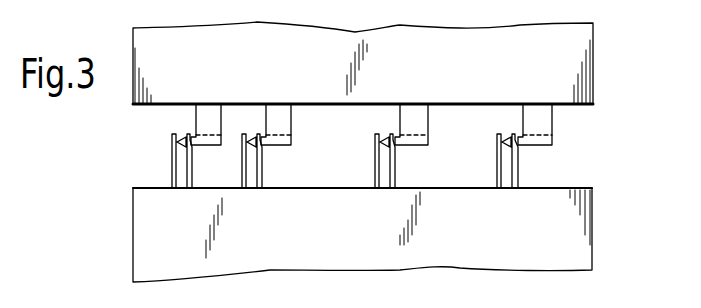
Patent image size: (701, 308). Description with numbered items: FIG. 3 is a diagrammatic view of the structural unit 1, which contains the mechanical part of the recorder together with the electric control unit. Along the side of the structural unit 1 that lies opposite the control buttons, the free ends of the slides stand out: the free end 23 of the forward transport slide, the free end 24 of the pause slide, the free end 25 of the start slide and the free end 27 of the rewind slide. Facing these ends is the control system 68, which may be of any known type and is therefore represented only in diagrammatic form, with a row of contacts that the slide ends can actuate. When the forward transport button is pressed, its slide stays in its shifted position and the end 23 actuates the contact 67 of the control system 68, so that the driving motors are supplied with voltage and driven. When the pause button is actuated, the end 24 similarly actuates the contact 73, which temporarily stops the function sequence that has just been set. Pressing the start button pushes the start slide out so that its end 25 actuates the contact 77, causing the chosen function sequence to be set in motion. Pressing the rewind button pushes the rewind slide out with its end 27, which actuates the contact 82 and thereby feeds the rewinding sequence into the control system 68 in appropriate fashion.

The structural unit 1 is at (604, 62).
The free end of forward transport slide 23 is at (210, 114).
The free end of pause slide 24 is at (277, 114).
The free end of start slide 25 is at (410, 114).
The free end of rewind slide 27 is at (540, 113).
The contact 67 is at (176, 166).
The contact 73 is at (250, 170).
The contact 77 is at (385, 170).
The contact 82 is at (503, 170).
The control system 68 is at (346, 244).